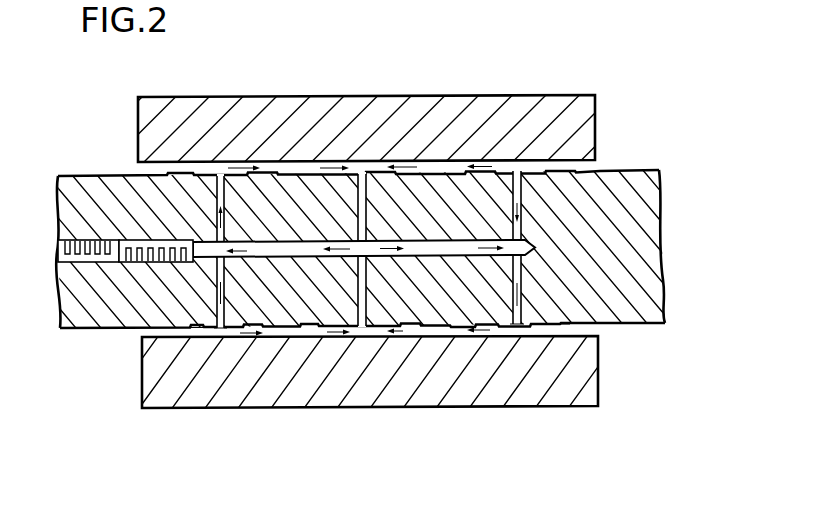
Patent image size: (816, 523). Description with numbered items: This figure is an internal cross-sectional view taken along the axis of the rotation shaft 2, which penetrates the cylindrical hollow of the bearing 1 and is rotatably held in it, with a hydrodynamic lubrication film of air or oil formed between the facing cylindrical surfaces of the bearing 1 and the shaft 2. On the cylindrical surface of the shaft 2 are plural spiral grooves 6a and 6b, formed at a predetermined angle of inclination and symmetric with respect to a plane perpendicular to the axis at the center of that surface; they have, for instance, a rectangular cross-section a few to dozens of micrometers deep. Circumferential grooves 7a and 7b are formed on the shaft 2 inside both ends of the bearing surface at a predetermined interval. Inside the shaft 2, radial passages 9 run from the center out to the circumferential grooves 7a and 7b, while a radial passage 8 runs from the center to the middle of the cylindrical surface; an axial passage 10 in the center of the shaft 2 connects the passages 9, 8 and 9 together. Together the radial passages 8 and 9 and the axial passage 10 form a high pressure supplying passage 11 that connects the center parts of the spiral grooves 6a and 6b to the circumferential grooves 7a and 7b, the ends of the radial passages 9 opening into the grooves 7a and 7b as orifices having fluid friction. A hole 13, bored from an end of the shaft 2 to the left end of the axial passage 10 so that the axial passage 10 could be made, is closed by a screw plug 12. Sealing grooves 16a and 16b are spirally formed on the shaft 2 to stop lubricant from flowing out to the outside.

The bearing 1 is at (160, 127).
The rotation shaft 2 is at (85, 192).
The spiral groove 6a is at (310, 325).
The spiral groove 6b is at (456, 325).
The circumferential groove 7a is at (218, 330).
The circumferential groove 7b is at (520, 325).
The radial passage 8 is at (355, 338).
The radial passage 9 is at (222, 272).
The axial passage 10 is at (458, 245).
The high pressure supplying passage 11 is at (412, 244).
The screw plug 12 is at (150, 256).
The hole 13 is at (66, 256).
The sealing groove 16a is at (200, 328).
The sealing groove 16b is at (563, 337).